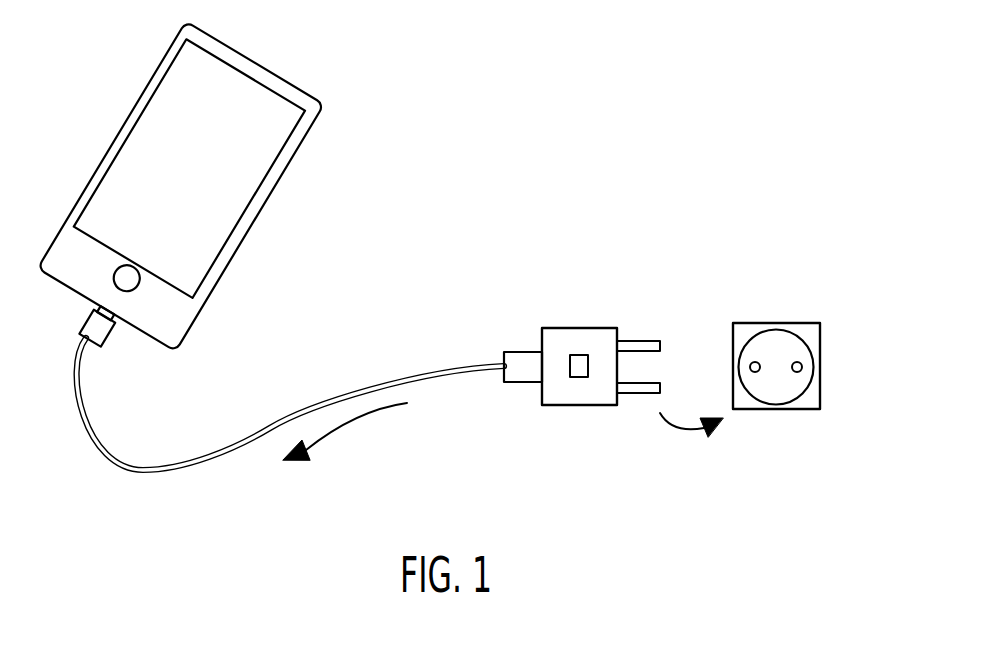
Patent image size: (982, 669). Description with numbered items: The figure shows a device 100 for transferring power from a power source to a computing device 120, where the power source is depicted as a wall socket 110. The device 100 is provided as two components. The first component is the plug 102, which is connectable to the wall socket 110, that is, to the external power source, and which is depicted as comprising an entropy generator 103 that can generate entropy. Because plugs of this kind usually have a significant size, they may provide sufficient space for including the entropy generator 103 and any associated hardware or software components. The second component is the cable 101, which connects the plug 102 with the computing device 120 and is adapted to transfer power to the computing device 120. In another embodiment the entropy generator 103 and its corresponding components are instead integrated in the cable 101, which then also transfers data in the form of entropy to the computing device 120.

The device 100 is at (500, 186).
The cable 101 is at (515, 378).
The plug 102 is at (588, 337).
The entropy generator 103 is at (580, 367).
The wall socket 110 is at (820, 337).
The computing device 120 is at (275, 192).